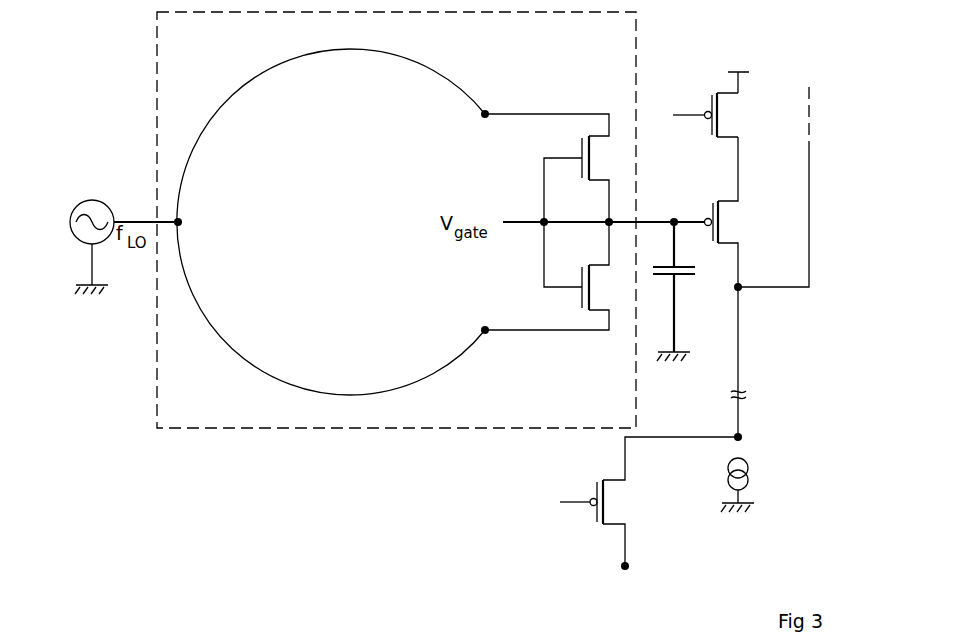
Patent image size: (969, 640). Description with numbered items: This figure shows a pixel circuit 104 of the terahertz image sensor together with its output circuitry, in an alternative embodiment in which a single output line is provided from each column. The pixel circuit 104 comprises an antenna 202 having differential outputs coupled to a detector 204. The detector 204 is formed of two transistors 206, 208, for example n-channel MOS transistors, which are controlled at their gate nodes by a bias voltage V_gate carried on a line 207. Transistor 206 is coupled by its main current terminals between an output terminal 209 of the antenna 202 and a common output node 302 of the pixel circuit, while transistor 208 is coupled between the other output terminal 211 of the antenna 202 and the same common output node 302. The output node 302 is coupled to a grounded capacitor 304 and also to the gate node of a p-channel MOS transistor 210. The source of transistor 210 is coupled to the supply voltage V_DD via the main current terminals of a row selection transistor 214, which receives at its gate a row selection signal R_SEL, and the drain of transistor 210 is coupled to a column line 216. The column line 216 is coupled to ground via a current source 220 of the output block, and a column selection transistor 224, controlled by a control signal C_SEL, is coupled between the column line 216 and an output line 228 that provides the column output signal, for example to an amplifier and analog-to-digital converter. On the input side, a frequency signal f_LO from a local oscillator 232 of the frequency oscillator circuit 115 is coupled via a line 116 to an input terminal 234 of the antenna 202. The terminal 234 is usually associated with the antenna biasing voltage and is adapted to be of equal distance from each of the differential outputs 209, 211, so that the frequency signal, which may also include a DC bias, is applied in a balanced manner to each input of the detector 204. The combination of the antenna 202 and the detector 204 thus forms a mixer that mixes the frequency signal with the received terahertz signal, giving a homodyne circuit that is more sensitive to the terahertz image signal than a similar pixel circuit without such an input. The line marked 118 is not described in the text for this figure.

The pixel circuit 104 is at (636, 34).
The frequency oscillator circuit 115 is at (88, 116).
The line 116 is at (130, 222).
The column line 118 is at (741, 418).
The antenna 202 is at (449, 72).
The detector 204 is at (571, 92).
The transistor 206 is at (597, 154).
The line 207 is at (526, 222).
The transistor 208 is at (597, 291).
The output terminal 209 is at (492, 113).
The transistor 210 is at (726, 215).
The output terminal 211 is at (486, 328).
The row selection transistor 214 is at (722, 118).
The column line 216 is at (740, 305).
The current source 220 is at (748, 474).
The column selection transistor 224 is at (618, 501).
The output line 228 is at (621, 566).
The local oscillator 232 is at (87, 207).
The input terminal 234 is at (182, 222).
The common output node 302 is at (612, 215).
The capacitor 304 is at (690, 283).